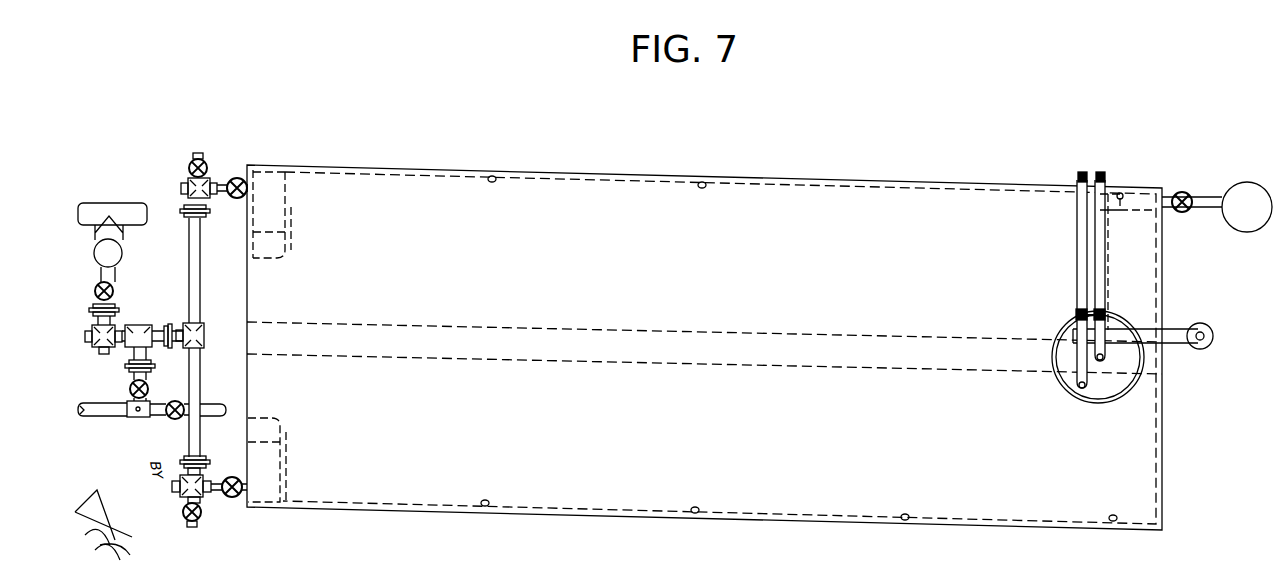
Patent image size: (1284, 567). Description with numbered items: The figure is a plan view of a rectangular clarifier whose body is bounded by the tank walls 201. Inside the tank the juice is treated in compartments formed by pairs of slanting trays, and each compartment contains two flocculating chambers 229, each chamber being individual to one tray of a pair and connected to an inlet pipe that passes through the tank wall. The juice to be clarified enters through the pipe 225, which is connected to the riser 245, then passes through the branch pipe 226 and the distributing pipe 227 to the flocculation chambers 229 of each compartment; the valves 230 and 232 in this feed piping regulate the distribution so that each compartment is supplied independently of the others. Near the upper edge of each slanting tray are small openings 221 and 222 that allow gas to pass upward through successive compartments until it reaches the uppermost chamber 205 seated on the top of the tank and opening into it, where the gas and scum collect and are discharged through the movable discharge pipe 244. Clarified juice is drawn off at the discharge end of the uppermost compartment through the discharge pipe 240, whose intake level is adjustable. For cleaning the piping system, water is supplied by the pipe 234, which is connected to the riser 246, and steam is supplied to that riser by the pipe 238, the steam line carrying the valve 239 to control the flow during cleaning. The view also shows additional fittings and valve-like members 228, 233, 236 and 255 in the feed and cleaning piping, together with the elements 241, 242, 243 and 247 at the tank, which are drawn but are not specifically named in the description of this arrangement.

The tank walls 201 is at (383, 170).
The uppermost chamber 205 is at (1063, 328).
The small openings 221 is at (494, 183).
The small openings 222 is at (489, 500).
The pipe 225 is at (130, 207).
The branch pipe 226 is at (115, 273).
The distributing pipe 227 is at (222, 298).
The upper valve 228 is at (222, 182).
The flocculating chamber 229 is at (292, 216).
The valve 230 is at (236, 199).
The valve 232 is at (113, 290).
The cross fitting 233 is at (95, 346).
The pipe 234 is at (78, 410).
The valve 236 is at (147, 389).
The pipe 238 is at (222, 412).
The valve 239 is at (176, 420).
The discharge pipe 240 is at (1200, 210).
The outlet chamber 241 is at (1243, 188).
The internal conduit 242 is at (1118, 235).
The discharge pipe 243 is at (1173, 336).
The movable discharge pipe 244 is at (1082, 390).
The riser 245 is at (122, 253).
The riser 246 is at (130, 414).
The compartment 247 is at (287, 248).
The valves 255 is at (197, 159).